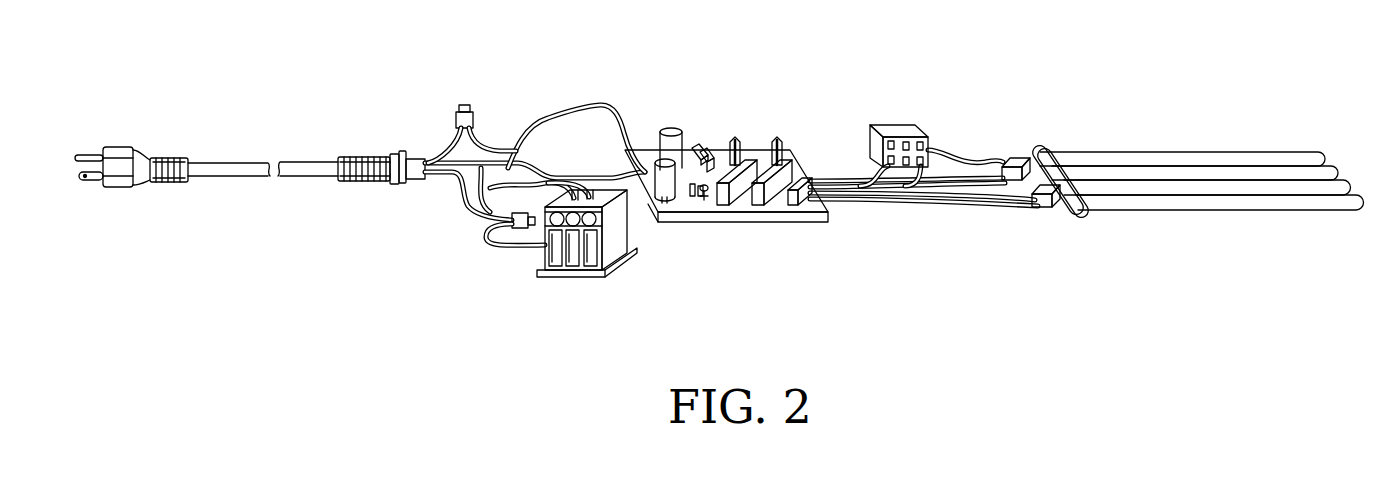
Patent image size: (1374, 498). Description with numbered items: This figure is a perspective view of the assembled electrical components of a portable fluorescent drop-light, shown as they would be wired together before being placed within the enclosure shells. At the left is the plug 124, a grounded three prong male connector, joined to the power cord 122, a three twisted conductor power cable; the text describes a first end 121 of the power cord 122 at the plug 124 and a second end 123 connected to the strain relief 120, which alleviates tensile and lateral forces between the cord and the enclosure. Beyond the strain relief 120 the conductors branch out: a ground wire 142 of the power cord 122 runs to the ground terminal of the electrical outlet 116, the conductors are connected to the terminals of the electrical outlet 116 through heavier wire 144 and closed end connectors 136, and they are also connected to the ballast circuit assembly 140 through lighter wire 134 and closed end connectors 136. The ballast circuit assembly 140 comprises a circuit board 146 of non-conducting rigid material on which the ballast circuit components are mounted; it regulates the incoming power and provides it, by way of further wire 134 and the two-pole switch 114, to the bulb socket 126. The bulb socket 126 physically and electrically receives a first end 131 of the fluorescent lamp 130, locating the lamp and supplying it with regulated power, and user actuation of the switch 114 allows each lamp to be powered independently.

The switch 114 is at (905, 125).
The electrical outlet 116 is at (612, 245).
The strain relief 120 is at (368, 158).
The first end of the power cord 121 is at (350, 182).
The power cord 122 is at (253, 165).
The second end of the power cord 123 is at (180, 180).
The plug 124 is at (118, 152).
The bulb socket 126 is at (1032, 145).
The fluorescent lamp 130 is at (1215, 190).
The first end of the fluorescent lamps 131 is at (1085, 215).
The 18 AWG wire 134 is at (598, 108).
The closed end connectors 136 is at (463, 105).
The ballast circuit assembly 140 is at (712, 148).
The ground wire 142 is at (466, 170).
The 14 AWG wire 144 is at (558, 128).
The circuit board 146 is at (722, 215).